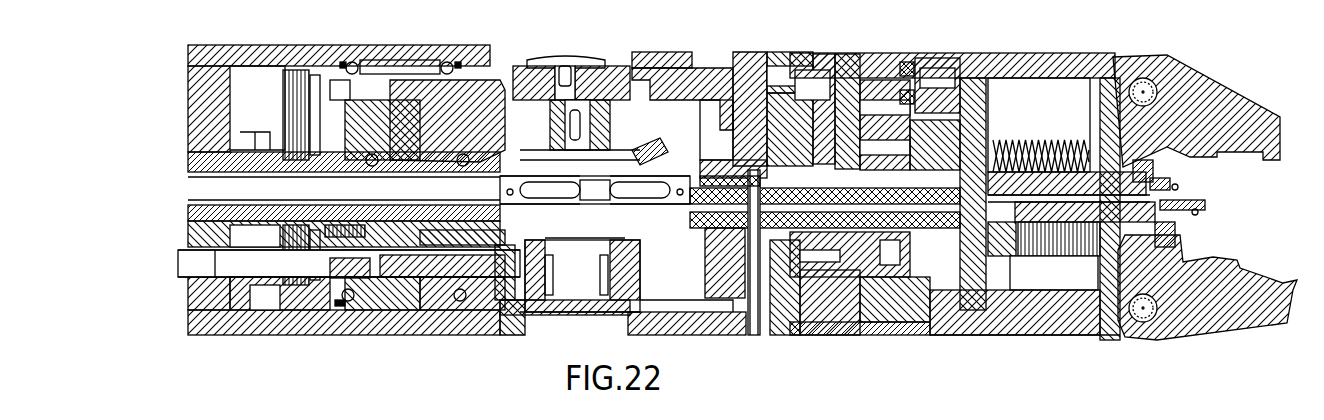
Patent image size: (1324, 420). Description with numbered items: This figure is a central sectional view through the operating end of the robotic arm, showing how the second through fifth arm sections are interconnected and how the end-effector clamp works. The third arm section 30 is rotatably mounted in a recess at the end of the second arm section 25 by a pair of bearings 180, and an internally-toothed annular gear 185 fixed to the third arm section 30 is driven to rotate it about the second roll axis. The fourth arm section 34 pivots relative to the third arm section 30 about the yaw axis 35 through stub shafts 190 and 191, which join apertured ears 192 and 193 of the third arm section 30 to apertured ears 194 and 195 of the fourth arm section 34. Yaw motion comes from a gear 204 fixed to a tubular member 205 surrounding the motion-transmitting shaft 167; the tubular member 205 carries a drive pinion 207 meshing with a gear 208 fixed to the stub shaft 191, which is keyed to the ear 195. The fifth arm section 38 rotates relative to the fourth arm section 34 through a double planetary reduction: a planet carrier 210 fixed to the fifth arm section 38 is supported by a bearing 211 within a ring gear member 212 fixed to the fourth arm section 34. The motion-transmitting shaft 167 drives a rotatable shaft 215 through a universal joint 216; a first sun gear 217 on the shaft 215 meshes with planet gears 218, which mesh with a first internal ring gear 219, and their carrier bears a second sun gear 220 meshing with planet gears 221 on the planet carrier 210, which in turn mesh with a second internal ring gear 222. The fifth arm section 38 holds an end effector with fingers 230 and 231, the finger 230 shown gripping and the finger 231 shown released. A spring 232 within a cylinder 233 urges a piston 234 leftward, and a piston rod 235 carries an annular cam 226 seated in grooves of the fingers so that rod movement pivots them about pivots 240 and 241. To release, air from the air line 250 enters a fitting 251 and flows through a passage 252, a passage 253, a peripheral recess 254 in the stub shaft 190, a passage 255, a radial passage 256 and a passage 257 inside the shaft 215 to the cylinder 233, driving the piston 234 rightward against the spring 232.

The second arm section 25 is at (425, 48).
The third arm section 30 is at (493, 82).
The fourth arm section 34 is at (735, 55).
The yaw axis 35 is at (582, 65).
The fifth arm section 38 is at (1065, 62).
The motion-transmitting shaft 167 is at (240, 182).
The bearings 180 is at (445, 68).
The internally-toothed annular gear 185 is at (303, 300).
The stub shaft 190 is at (600, 285).
The stub shaft 191 is at (590, 112).
The apertured ear 192 is at (503, 320).
The apertured ear 193 is at (662, 56).
The apertured ear 194 is at (660, 320).
The apertured ear 195 is at (651, 64).
The gear 204 is at (258, 258).
The tubular member 205 is at (328, 178).
The drive pinion 207 is at (505, 218).
The gear 208 is at (640, 150).
The planet carrier 210 is at (955, 85).
The bearing 211 is at (935, 60).
The ring gear member 212 is at (838, 75).
The rotatable shaft 215 is at (1044, 239).
The universal joint 216 is at (605, 208).
The first sun gear 217 is at (756, 115).
The planet gears 218 is at (855, 130).
The first internal ring gear 219 is at (830, 70).
The second sun gear 220 is at (975, 140).
The planet gears 221 is at (975, 106).
The second internal ring gear 222 is at (895, 75).
The annular cam 226 is at (1165, 165).
The finger 230 is at (1207, 100).
The finger 231 is at (1220, 262).
The spring 232 is at (1058, 140).
The cylinder 233 is at (1040, 310).
The piston 234 is at (1015, 302).
The piston rod 235 is at (1180, 193).
The pivot 240 is at (1165, 72).
The pivot 241 is at (1150, 320).
The air line 250 is at (213, 265).
The fitting 251 is at (405, 280).
The passage 252 is at (388, 260).
The passage 253 is at (477, 270).
The peripheral recess 254 is at (540, 282).
The passage 255 is at (728, 310).
The radial passage 256 is at (788, 280).
The passage 257 is at (945, 200).